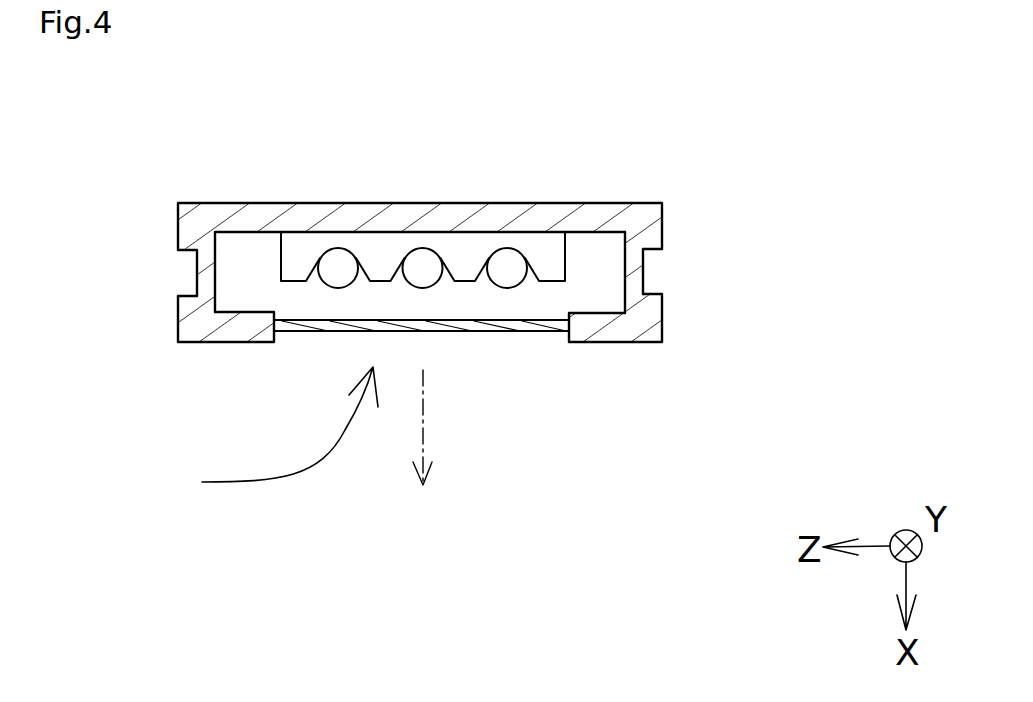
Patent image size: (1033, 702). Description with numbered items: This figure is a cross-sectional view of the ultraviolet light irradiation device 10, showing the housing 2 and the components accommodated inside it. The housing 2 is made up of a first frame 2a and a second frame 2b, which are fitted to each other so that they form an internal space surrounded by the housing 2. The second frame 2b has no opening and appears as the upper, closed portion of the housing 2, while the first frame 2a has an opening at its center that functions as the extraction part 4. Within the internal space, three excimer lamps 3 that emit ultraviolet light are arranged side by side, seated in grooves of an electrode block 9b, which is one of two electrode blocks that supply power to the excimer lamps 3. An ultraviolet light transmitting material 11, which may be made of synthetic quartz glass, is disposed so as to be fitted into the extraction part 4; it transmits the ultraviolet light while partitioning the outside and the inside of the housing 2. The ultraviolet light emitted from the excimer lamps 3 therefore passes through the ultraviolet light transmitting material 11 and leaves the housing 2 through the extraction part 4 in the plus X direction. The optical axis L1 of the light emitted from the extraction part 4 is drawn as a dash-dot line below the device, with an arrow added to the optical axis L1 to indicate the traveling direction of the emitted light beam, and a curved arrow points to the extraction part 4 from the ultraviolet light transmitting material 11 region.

The ultraviolet light irradiation device 10 is at (703, 175).
The housing 2 is at (437, 272).
The second frame 2b is at (662, 226).
The first frame 2a is at (662, 301).
The electrode block 9b is at (303, 245).
The excimer lamp 3 is at (338, 275).
The ultraviolet light transmitting material 11 is at (300, 331).
The extraction part 4 is at (279, 434).
The optical axis L1 is at (427, 445).